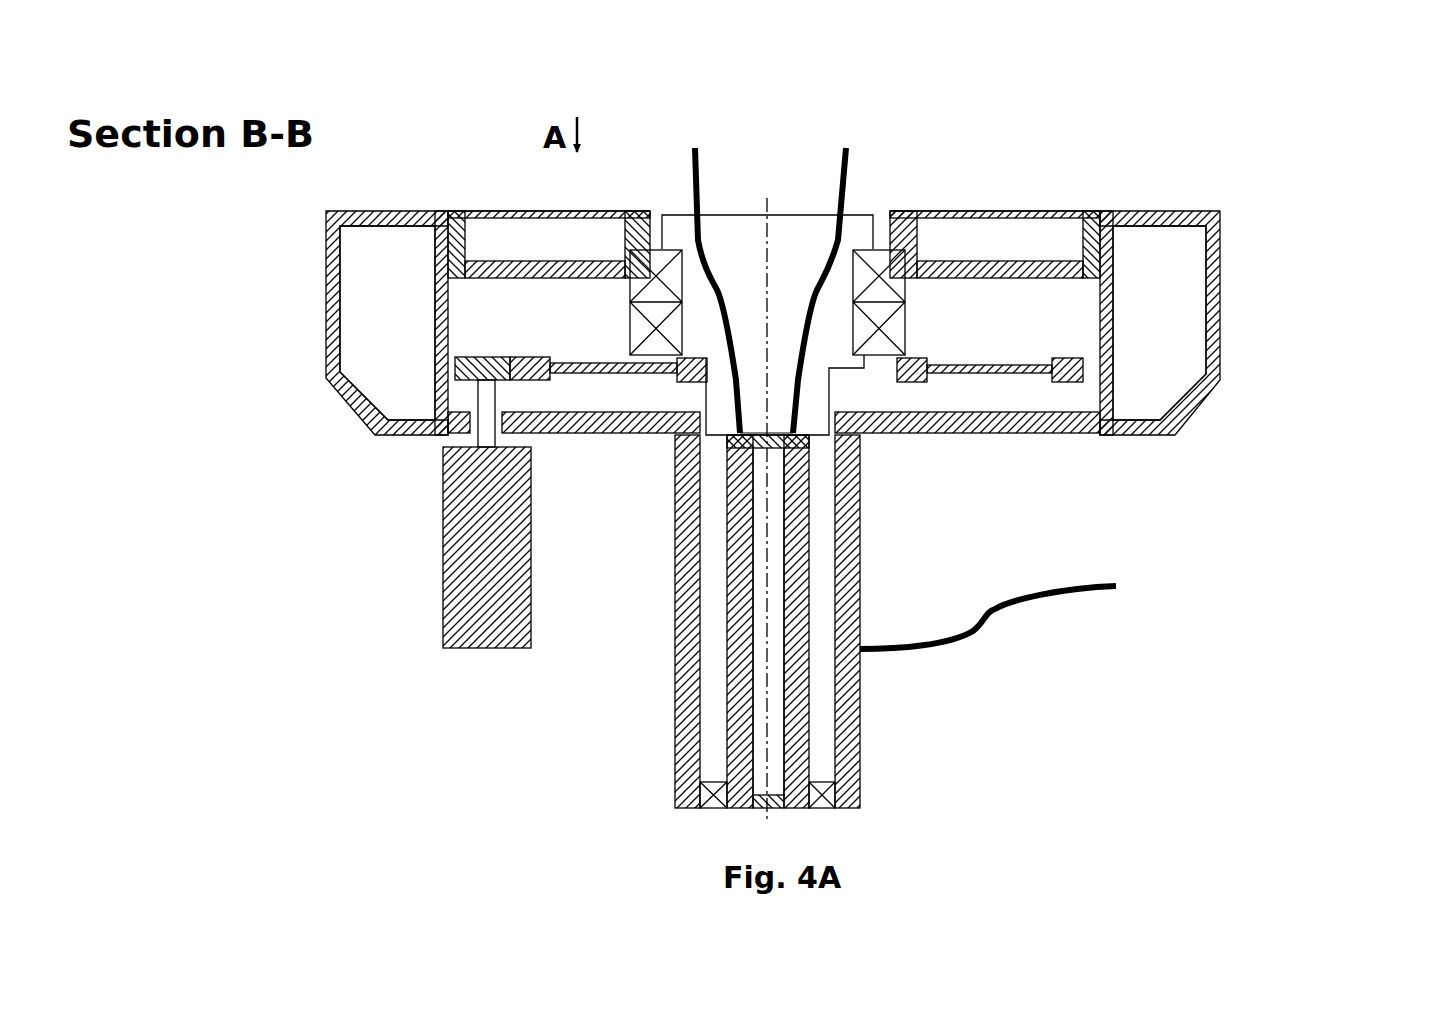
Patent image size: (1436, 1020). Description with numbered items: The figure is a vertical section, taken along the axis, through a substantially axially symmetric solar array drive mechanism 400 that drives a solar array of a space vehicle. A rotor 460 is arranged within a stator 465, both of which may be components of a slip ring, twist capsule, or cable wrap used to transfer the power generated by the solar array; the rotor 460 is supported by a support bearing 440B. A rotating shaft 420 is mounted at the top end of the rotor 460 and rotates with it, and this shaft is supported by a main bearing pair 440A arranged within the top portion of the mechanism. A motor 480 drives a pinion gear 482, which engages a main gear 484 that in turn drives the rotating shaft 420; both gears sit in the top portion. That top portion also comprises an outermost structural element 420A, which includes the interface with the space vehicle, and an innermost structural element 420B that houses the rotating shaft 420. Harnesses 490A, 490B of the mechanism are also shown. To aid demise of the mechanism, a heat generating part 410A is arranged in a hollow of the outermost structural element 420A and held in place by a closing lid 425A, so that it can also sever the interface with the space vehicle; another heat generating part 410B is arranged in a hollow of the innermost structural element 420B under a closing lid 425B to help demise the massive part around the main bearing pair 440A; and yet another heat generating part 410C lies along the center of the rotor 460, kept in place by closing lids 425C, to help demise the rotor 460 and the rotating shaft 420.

The solar array drive mechanism 400 is at (298, 105).
The outermost structural element 420A is at (328, 218).
The innermost structural element 420B is at (1113, 273).
The heat generating part 410A is at (378, 320).
The heat generating part 410B is at (500, 240).
The closing lid 425B is at (527, 212).
The main bearing pair 440A is at (875, 258).
The harness 490A is at (842, 160).
The rotating shaft 420 is at (782, 235).
The closing lid 425A is at (345, 403).
The pinion gear 482 is at (470, 382).
The main gear 484 is at (697, 382).
The motor 480 is at (470, 593).
The heat generating part 410C is at (763, 683).
The stator 465 is at (837, 667).
The rotor 460 is at (803, 715).
The closing lids 425C is at (800, 445).
The support bearing 440B is at (825, 795).
The harness 490B is at (995, 617).